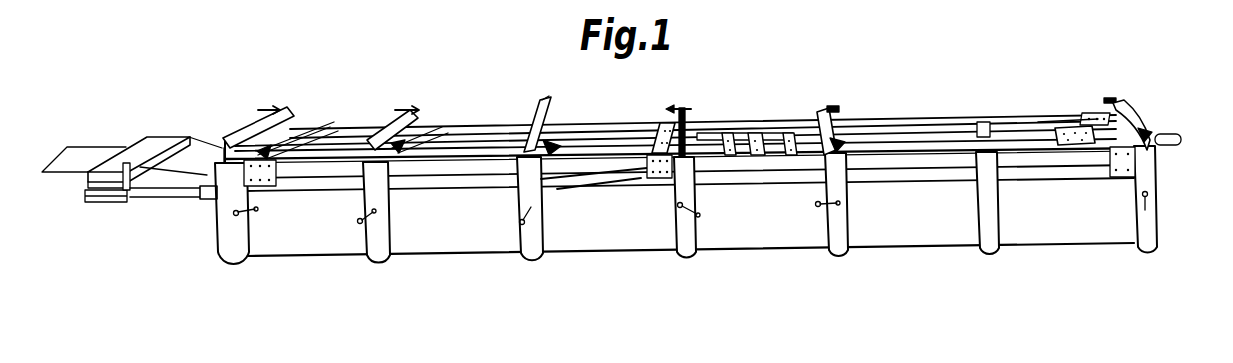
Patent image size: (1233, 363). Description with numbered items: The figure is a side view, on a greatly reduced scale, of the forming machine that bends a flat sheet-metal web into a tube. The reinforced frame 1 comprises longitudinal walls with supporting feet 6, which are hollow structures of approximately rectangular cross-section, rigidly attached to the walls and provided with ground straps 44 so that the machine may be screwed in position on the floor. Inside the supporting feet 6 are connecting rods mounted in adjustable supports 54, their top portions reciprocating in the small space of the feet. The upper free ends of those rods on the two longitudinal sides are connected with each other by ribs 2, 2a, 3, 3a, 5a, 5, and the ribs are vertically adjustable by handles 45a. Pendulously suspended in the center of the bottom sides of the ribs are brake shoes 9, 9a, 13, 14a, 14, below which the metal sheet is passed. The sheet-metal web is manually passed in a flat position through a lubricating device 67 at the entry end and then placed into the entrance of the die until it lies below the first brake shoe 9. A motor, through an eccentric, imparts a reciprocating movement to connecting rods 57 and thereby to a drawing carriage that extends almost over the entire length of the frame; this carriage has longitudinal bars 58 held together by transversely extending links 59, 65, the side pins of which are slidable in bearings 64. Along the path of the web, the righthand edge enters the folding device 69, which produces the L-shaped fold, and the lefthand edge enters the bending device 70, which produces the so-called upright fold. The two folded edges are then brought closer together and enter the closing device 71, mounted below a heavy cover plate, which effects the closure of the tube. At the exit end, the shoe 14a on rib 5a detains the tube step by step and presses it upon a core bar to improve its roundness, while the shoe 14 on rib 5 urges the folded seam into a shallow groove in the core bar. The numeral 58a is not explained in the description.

The reinforced frame 1 is at (463, 233).
The rib 2 is at (280, 123).
The rib 2a is at (400, 123).
The rib 3 is at (538, 112).
The rib 3a is at (683, 120).
The rib 5 is at (1126, 113).
The rib 5a is at (833, 120).
The supporting feet 6 is at (1145, 235).
The brake shoe 9 is at (264, 152).
The brake shoe 9a is at (397, 146).
The brake shoe 13 is at (553, 140).
The shoe 14 is at (1150, 131).
The shoe 14a is at (842, 138).
The ground straps 44 is at (378, 270).
The handles 45a is at (832, 106).
The adjustable supports 54 is at (822, 212).
The connecting rods 57 is at (573, 182).
The longitudinal bars 58 is at (948, 133).
The longitudinal rail 58a is at (762, 120).
The transversely extending link 59 is at (657, 127).
The bearings 64 is at (658, 168).
The transversely extending link 65 is at (1068, 122).
The lubricating device 67 is at (161, 140).
The folding device 69 is at (740, 133).
The bending device 70 is at (775, 147).
The closing device 71 is at (1040, 121).